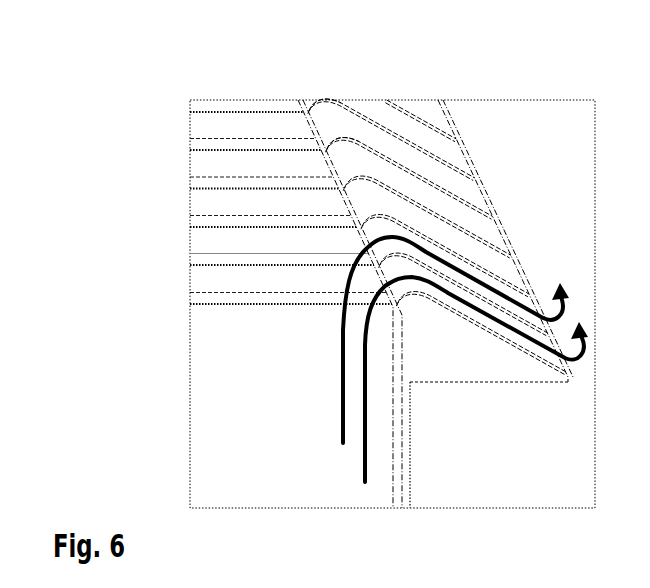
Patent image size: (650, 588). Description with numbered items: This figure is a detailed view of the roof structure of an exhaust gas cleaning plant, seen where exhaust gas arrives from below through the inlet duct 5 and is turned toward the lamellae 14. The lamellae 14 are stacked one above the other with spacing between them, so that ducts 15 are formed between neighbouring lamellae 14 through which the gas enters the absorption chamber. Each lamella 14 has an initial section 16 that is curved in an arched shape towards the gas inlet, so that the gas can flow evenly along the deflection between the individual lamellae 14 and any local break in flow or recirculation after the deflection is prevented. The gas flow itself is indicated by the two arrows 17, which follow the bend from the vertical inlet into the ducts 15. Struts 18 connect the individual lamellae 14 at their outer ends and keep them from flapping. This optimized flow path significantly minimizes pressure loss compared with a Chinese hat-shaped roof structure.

The inlet duct 5 is at (397, 506).
The lamellae 14 is at (442, 131).
The ducts 15 is at (473, 227).
The initial section 16 is at (328, 100).
The arrows 17 is at (505, 332).
The struts 18 is at (489, 197).